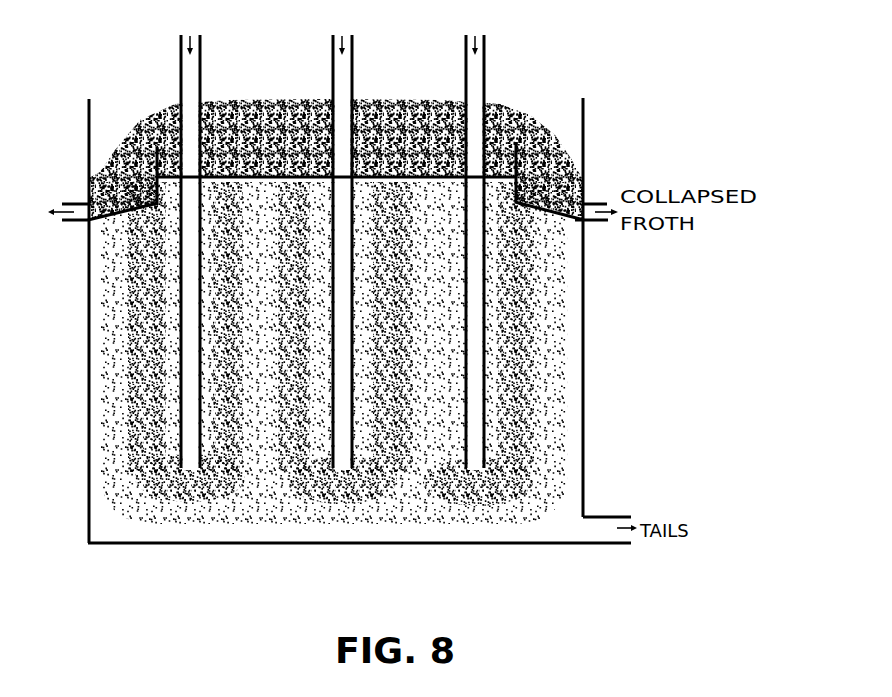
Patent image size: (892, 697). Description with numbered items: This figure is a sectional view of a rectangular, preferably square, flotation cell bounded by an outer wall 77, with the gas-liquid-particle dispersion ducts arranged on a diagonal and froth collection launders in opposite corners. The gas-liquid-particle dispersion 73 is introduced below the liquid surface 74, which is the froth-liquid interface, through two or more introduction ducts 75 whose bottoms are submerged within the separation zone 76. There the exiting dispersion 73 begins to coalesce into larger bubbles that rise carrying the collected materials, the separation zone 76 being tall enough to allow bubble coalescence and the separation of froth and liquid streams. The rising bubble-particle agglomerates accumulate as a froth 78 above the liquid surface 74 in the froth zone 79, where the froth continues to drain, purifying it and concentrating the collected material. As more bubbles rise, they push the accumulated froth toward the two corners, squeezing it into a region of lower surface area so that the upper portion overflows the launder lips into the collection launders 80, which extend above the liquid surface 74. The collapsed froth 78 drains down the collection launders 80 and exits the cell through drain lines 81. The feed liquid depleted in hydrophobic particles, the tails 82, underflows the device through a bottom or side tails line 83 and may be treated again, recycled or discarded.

The gas-liquid-particle dispersion 73 is at (478, 490).
The liquid surface (froth-liquid interface) 74 is at (276, 170).
The introduction ducts 75 is at (486, 52).
The separation zone 76 is at (423, 367).
The outer wall 77 is at (585, 298).
The froth 78 is at (385, 100).
The froth zone 79 is at (303, 130).
The collection launders 80 is at (145, 130).
The drain lines 81 is at (75, 205).
The tails 82 is at (622, 537).
The tails line 83 is at (608, 517).